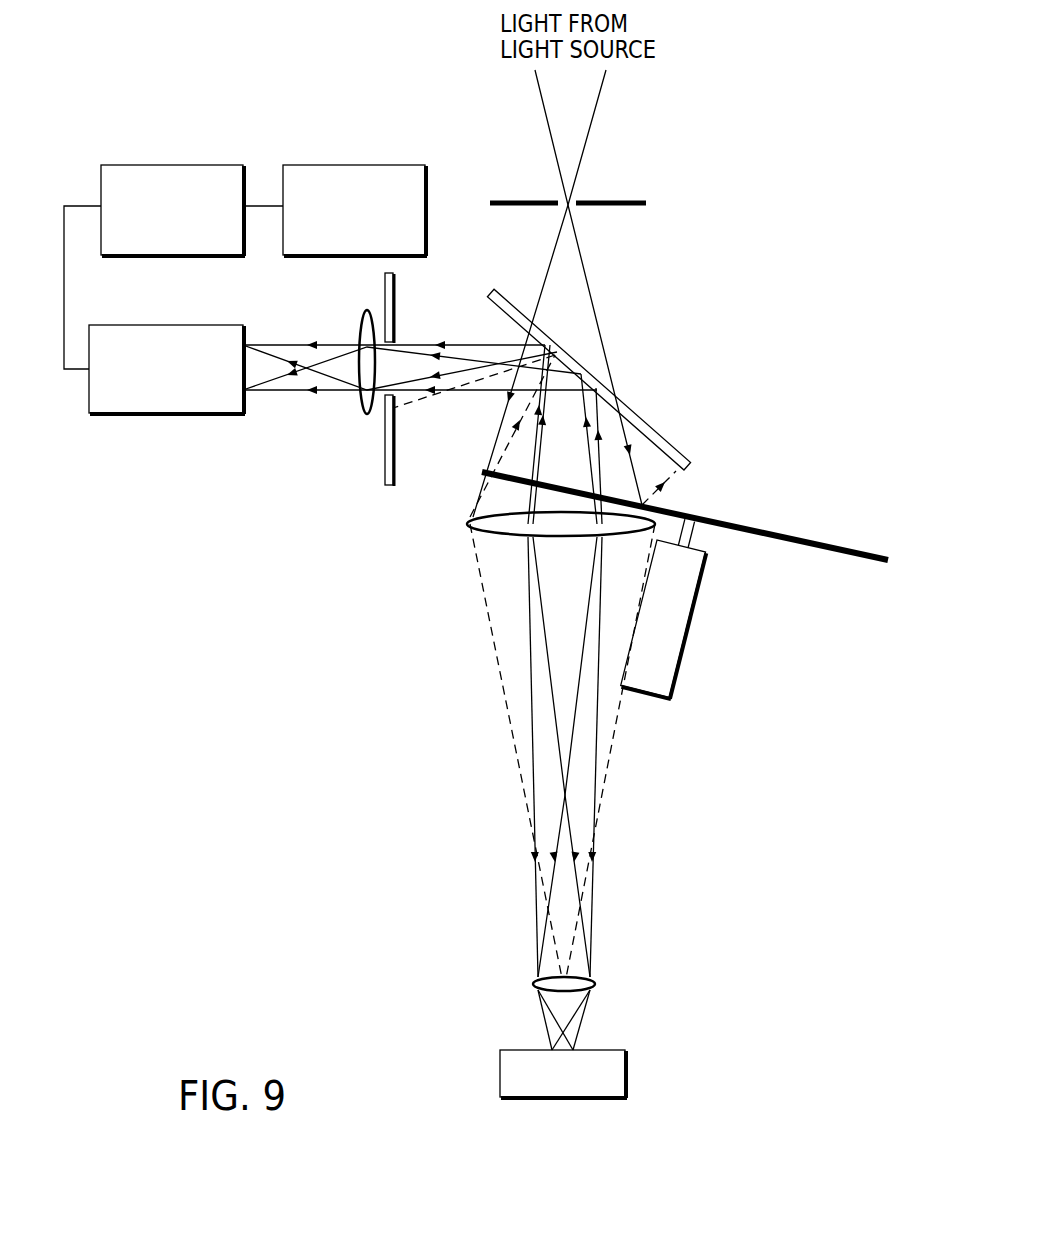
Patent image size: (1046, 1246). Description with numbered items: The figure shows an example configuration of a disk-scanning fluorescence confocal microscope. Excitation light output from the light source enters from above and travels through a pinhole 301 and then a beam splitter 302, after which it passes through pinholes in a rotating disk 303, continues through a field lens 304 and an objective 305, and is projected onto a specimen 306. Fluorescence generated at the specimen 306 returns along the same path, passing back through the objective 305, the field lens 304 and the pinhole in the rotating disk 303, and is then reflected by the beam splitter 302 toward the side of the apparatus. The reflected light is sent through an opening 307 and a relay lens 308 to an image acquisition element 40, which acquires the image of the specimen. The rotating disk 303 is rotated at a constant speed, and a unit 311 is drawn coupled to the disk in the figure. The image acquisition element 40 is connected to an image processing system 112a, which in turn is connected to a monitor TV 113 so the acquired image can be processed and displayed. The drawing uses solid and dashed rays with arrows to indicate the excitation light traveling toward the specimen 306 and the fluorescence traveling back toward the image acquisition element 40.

The image processing system 112a is at (172, 165).
The monitor TV 113 is at (350, 165).
The image acquisition element 40 is at (185, 323).
The pinhole 301 is at (583, 197).
The beam splitter 302 is at (662, 425).
The rotating disk 303 is at (823, 549).
The field lens 304 is at (466, 522).
The objective 305 is at (533, 985).
The specimen 306 is at (500, 1076).
The opening 307 is at (394, 300).
The relay lens 308 is at (369, 402).
The mirror drive unit 311 is at (690, 632).